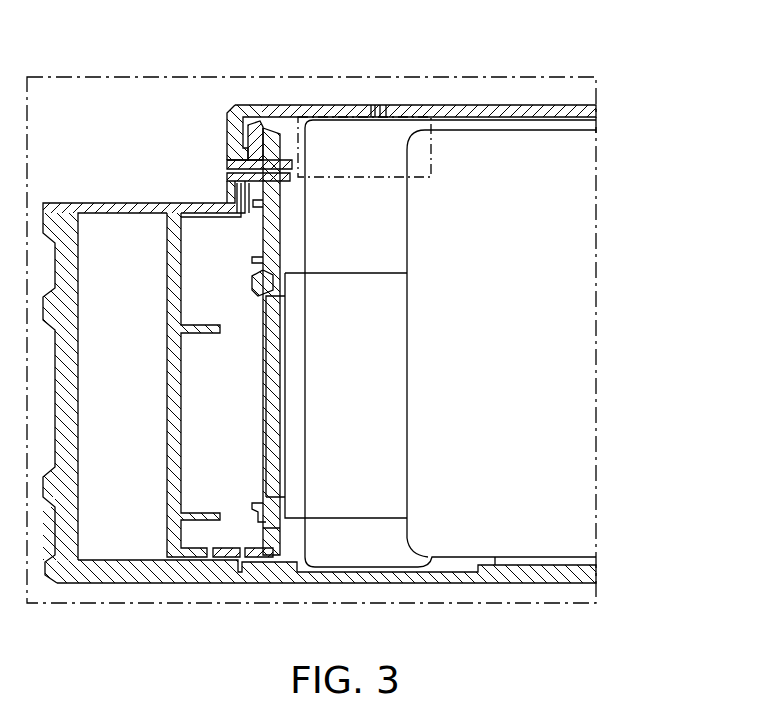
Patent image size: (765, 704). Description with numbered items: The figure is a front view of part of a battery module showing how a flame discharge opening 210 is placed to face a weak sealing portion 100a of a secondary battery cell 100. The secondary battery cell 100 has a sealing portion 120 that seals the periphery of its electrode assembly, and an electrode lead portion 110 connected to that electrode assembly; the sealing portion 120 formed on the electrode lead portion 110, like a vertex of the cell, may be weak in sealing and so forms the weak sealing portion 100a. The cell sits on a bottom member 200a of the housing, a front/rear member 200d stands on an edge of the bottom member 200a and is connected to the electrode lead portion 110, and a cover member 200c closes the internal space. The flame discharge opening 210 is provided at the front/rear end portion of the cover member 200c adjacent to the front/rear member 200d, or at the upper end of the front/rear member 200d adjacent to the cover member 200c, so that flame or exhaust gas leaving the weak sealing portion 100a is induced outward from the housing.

The secondary battery cell 100 is at (493, 343).
The electrode lead portion 110 is at (275, 370).
The sealing portion 120 is at (390, 252).
The weak sealing portion 100a is at (452, 147).
The bottom member 200a is at (510, 580).
The cover member 200c is at (420, 105).
The front/rear member 200d is at (272, 105).
The flame discharge opening 210 is at (292, 163).